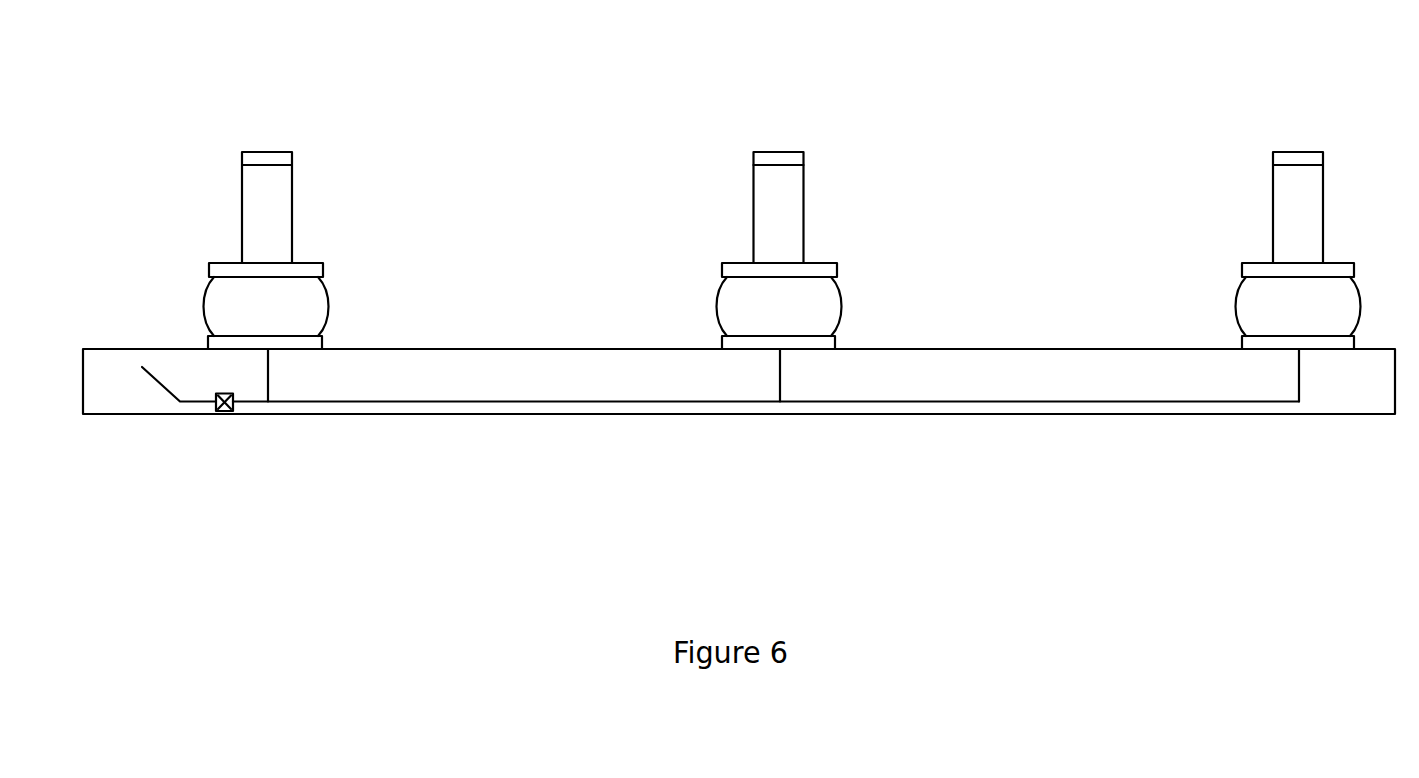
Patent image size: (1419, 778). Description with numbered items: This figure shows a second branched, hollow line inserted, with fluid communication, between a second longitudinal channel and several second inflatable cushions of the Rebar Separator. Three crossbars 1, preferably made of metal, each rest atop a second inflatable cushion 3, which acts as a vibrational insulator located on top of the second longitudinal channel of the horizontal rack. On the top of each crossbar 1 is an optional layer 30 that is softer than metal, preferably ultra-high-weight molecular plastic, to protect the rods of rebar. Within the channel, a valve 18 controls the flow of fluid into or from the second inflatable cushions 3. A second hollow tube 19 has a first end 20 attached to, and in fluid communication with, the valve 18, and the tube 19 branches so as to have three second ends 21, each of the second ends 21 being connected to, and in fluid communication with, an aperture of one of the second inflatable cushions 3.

The crossbar 1 is at (276, 196).
The second inflatable cushion 3 is at (295, 310).
The valve 18 is at (224, 411).
The second hollow tube 19 is at (911, 403).
The first end 20 is at (248, 405).
The second ends 21 is at (270, 367).
The layer 30 is at (273, 157).